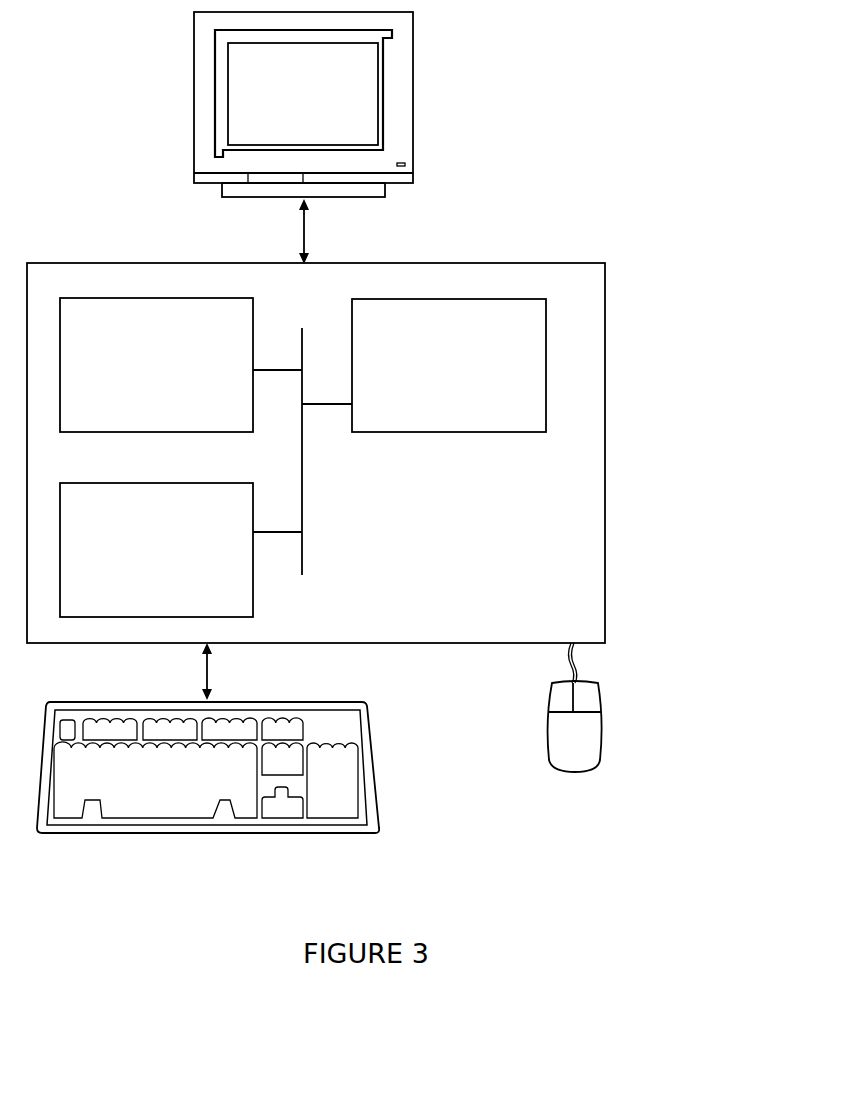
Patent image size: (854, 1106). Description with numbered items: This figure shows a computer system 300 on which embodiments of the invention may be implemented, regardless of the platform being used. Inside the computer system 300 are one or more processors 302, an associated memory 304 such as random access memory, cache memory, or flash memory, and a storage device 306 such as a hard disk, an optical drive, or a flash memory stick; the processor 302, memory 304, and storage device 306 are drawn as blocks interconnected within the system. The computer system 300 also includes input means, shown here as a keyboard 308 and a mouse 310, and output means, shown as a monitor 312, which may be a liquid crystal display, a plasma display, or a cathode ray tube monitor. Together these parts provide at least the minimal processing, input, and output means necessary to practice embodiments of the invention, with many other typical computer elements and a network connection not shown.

The computer system 300 is at (620, 142).
The processor 302 is at (143, 388).
The memory 304 is at (143, 571).
The storage device 306 is at (436, 388).
The keyboard 308 is at (147, 801).
The mouse 310 is at (606, 706).
The monitor 312 is at (290, 118).